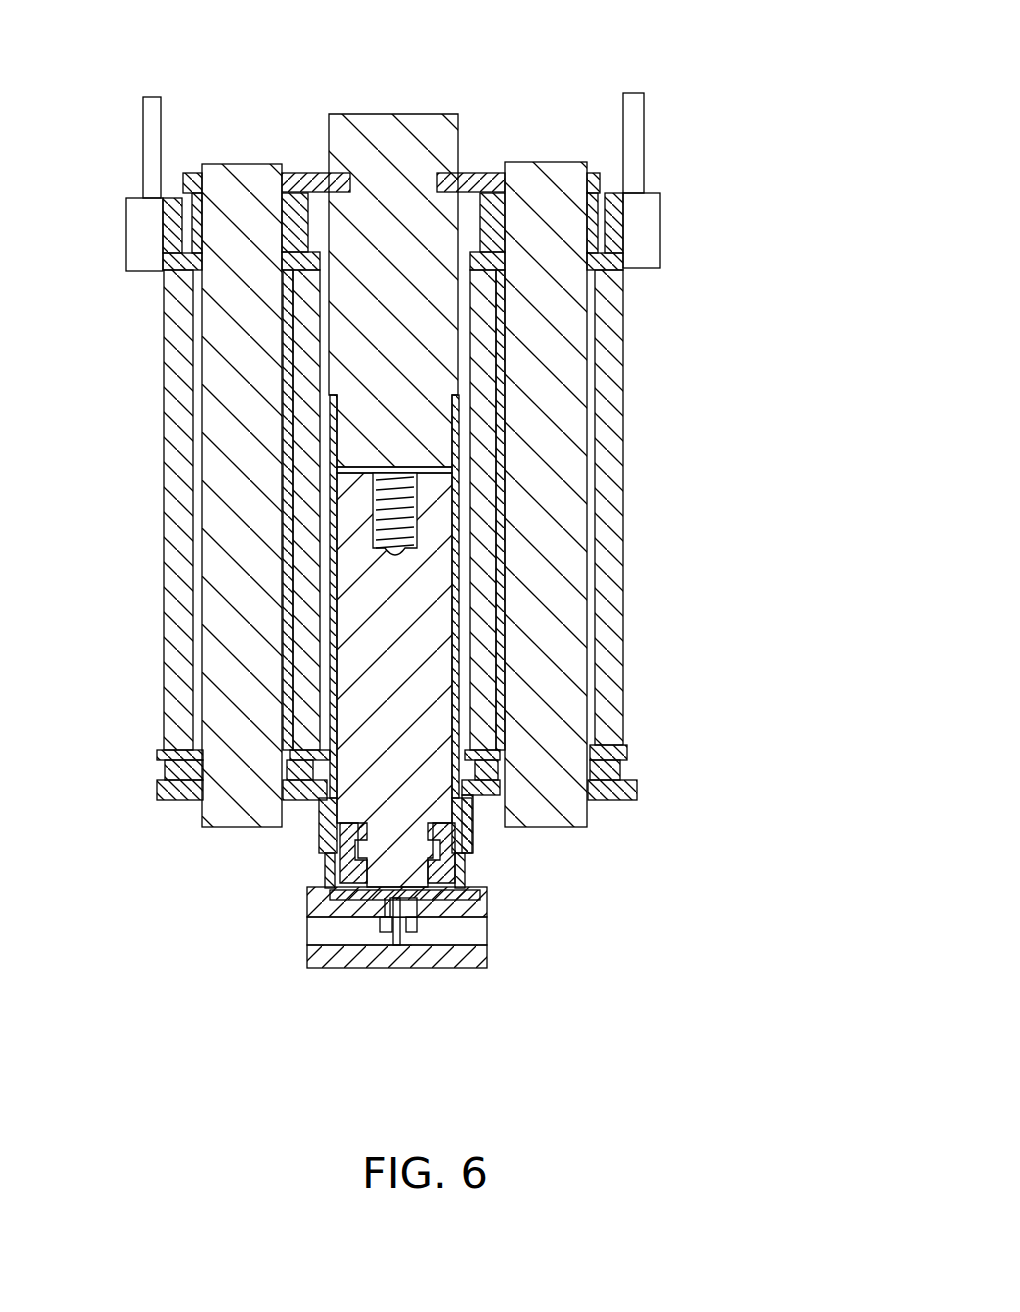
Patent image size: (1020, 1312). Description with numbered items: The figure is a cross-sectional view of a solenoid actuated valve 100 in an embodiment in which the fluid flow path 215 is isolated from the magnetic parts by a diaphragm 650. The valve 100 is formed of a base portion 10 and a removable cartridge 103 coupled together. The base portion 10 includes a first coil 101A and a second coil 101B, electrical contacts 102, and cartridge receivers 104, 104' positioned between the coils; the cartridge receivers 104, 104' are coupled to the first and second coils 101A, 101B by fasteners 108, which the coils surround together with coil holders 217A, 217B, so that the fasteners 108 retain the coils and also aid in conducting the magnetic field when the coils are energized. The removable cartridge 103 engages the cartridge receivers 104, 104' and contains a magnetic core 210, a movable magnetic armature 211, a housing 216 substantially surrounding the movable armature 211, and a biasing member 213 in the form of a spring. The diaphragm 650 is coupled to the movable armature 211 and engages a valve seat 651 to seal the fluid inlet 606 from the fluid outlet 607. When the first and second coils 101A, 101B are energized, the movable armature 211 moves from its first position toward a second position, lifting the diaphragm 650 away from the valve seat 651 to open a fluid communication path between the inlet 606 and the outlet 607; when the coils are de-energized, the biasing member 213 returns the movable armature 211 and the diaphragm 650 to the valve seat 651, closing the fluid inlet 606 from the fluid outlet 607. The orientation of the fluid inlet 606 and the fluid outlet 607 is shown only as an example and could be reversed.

The valve 100 is at (685, 67).
The electrical contacts 102 is at (160, 118).
The cartridge receiver 104' is at (393, 150).
The magnetic core 210 is at (447, 342).
The housing 216 is at (453, 467).
The second coil 101B is at (616, 523).
The biasing member 213 is at (417, 535).
The movable magnetic armature 211 is at (430, 642).
The first coil 101A is at (163, 577).
The coil holder 217A is at (160, 752).
The coil holder 217B is at (628, 752).
The fasteners 108 is at (214, 826).
The cartridge receiver 104 is at (403, 535).
The diaphragm 650 is at (440, 897).
The base portion 10 is at (676, 824).
The removable cartridge 103 is at (304, 876).
The fluid inlet 606 is at (302, 937).
The fluid flow path 215 is at (385, 910).
The valve seat 651 is at (398, 915).
The fluid outlet 607 is at (504, 933).